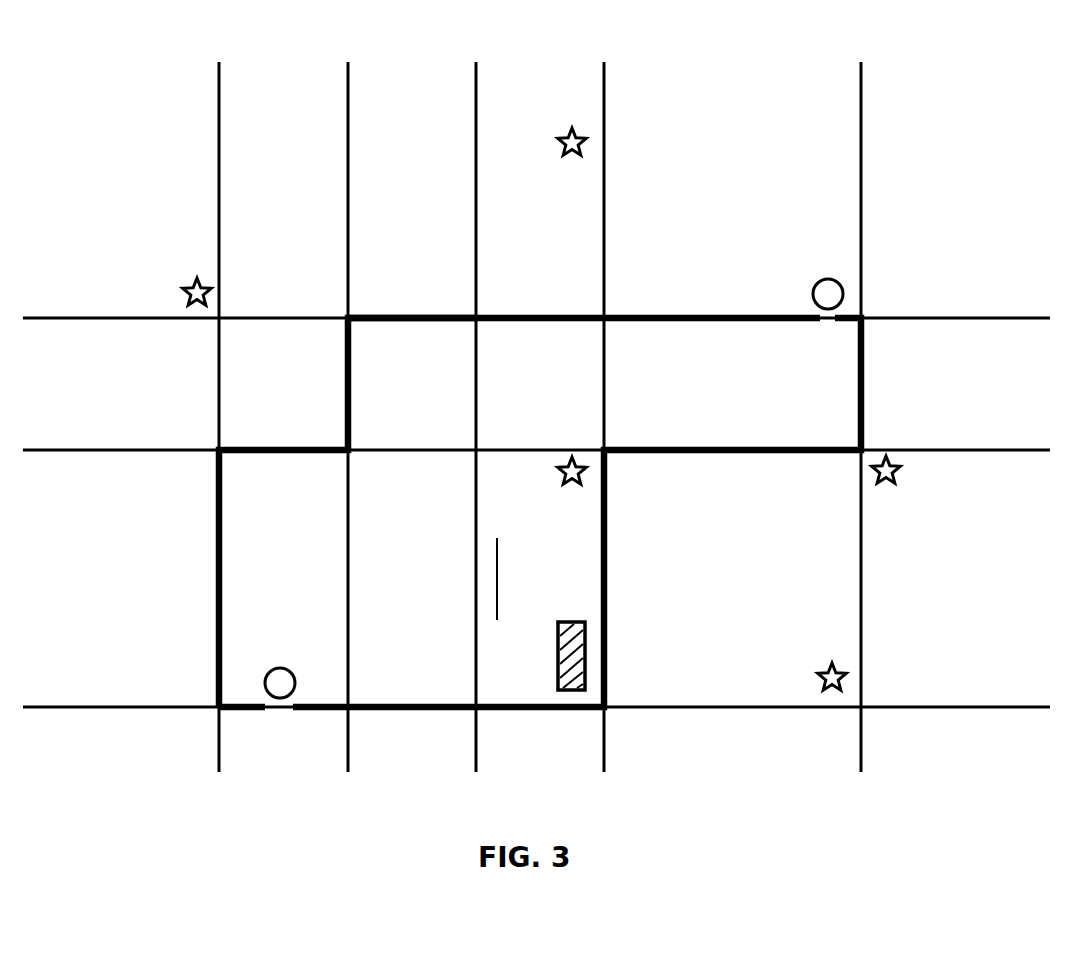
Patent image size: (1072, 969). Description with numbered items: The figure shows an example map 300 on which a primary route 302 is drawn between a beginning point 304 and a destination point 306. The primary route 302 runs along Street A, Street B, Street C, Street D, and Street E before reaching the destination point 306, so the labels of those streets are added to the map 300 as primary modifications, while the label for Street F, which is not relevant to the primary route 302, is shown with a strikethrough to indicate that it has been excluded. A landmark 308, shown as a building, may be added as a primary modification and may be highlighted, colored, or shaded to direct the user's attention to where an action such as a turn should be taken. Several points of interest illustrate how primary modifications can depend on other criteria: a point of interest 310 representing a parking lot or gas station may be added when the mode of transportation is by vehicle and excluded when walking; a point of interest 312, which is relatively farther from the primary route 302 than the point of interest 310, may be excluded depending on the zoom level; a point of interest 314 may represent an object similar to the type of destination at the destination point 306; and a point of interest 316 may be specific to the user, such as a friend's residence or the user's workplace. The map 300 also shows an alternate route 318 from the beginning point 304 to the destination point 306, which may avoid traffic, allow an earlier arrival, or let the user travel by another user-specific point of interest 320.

The map 300 is at (100, 55).
The primary route 302 is at (788, 456).
The beginning point 304 is at (283, 667).
The destination point 306 is at (818, 281).
The landmark 308 is at (568, 620).
The point of interest 310 is at (895, 487).
The point of interest 312 is at (820, 668).
The point of interest 314 is at (560, 483).
The point of interest 316 is at (561, 138).
The alternate route 318 is at (396, 315).
The point of interest 320 is at (186, 284).